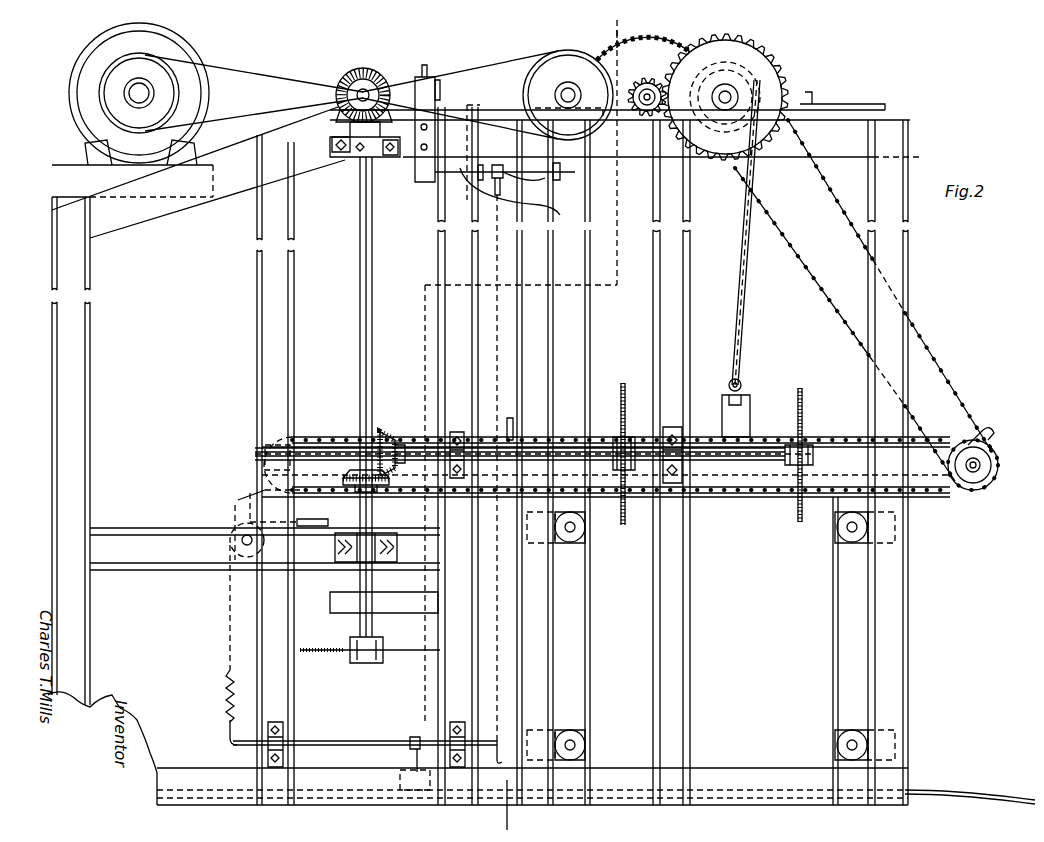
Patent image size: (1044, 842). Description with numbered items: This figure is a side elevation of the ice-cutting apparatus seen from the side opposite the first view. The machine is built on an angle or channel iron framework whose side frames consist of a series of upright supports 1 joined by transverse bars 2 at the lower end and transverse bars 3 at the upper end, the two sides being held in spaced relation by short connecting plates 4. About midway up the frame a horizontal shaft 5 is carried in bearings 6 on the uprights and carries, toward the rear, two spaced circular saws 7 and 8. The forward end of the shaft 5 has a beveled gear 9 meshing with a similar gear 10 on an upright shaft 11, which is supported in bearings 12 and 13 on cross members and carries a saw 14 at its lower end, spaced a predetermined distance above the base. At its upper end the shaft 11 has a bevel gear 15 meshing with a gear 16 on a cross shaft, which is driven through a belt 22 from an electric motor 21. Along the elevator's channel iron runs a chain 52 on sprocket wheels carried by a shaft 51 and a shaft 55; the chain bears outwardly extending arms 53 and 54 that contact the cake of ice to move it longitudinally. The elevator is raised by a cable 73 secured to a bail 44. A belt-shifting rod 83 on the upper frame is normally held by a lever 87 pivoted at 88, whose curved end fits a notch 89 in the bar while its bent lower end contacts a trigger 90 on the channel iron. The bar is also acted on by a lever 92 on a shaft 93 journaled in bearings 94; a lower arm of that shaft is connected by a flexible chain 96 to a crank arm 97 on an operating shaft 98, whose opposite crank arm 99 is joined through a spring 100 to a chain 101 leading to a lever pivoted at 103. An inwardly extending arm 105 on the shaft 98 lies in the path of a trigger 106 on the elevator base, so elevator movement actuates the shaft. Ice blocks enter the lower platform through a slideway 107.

The upright supports 1 is at (690, 632).
The transverse bars 2 is at (773, 768).
The transverse bars 3 is at (847, 152).
The connecting plates 4 is at (639, 423).
The horizontal shafts 5 is at (575, 448).
The bearings 6 is at (453, 432).
The circular saw 7 is at (805, 405).
The circular saw 8 is at (626, 398).
The beveled gears 9 is at (392, 432).
The gear 10 is at (352, 472).
The upright shaft 11 is at (373, 392).
The bearing 12 is at (382, 533).
The bearing 13 is at (356, 158).
The saw 14 is at (346, 640).
The bevel gear 15 is at (352, 120).
The gear 16 is at (378, 82).
The electric motor 21 is at (148, 94).
The belt 22 is at (236, 72).
The bail 44 is at (744, 410).
The shaft 51 is at (262, 444).
The chain 52 is at (757, 497).
The outwardly extending arm 53 is at (986, 432).
The outwardly extending arm 54 is at (255, 492).
The shaft 55 is at (986, 462).
The cable 73 is at (745, 258).
The belt-shifting rod 83 is at (430, 78).
The lever 87 is at (545, 207).
The pivot 88 is at (475, 120).
The notch 89 is at (444, 104).
The trigger 90 is at (512, 420).
The lever 92 is at (498, 165).
The shaft 93 is at (535, 182).
The bearings 94 is at (562, 172).
The flexible chain 96 is at (503, 626).
The crank arm 97 is at (505, 737).
The operating shaft 98 is at (368, 740).
The crank arm 99 is at (229, 738).
The spring 100 is at (226, 680).
The chain 101 is at (228, 636).
The pivot 103 is at (300, 522).
The inwardly extending arm 105 is at (416, 737).
The trigger 106 is at (408, 772).
The slideway 107 is at (968, 790).